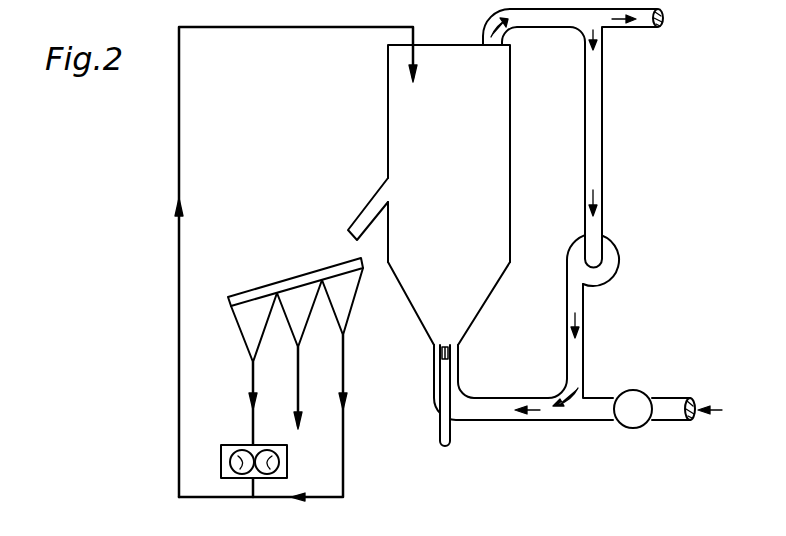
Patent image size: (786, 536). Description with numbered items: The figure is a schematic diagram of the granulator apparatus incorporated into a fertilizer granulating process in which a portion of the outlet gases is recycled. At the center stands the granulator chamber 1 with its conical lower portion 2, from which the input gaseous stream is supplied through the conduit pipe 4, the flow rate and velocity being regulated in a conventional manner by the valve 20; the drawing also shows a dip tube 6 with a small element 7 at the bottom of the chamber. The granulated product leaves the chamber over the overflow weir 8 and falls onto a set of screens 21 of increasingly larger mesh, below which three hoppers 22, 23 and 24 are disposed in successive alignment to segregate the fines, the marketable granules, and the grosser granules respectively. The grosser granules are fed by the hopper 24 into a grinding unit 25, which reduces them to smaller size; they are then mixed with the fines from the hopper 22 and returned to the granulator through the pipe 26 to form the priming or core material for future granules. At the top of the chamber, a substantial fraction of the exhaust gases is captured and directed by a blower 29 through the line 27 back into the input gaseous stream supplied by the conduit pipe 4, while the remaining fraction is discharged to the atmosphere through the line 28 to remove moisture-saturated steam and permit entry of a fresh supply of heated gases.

The granulator chamber 1 is at (505, 168).
The conical bottom of vessel 2 is at (483, 285).
The conduit pipe 4 is at (470, 400).
The dip tube 6 is at (447, 382).
The outlet valve 7 is at (450, 351).
The overflow weir 8 is at (370, 210).
The valve 20 is at (633, 428).
The set of screens 21 is at (285, 280).
The hopper 22 is at (346, 305).
The hopper 23 is at (299, 318).
The hopper 24 is at (257, 322).
The grinding unit 25 is at (236, 455).
The pipe 26 is at (178, 340).
The line 27 is at (595, 145).
The line 28 is at (643, 20).
The blower 29 is at (612, 263).